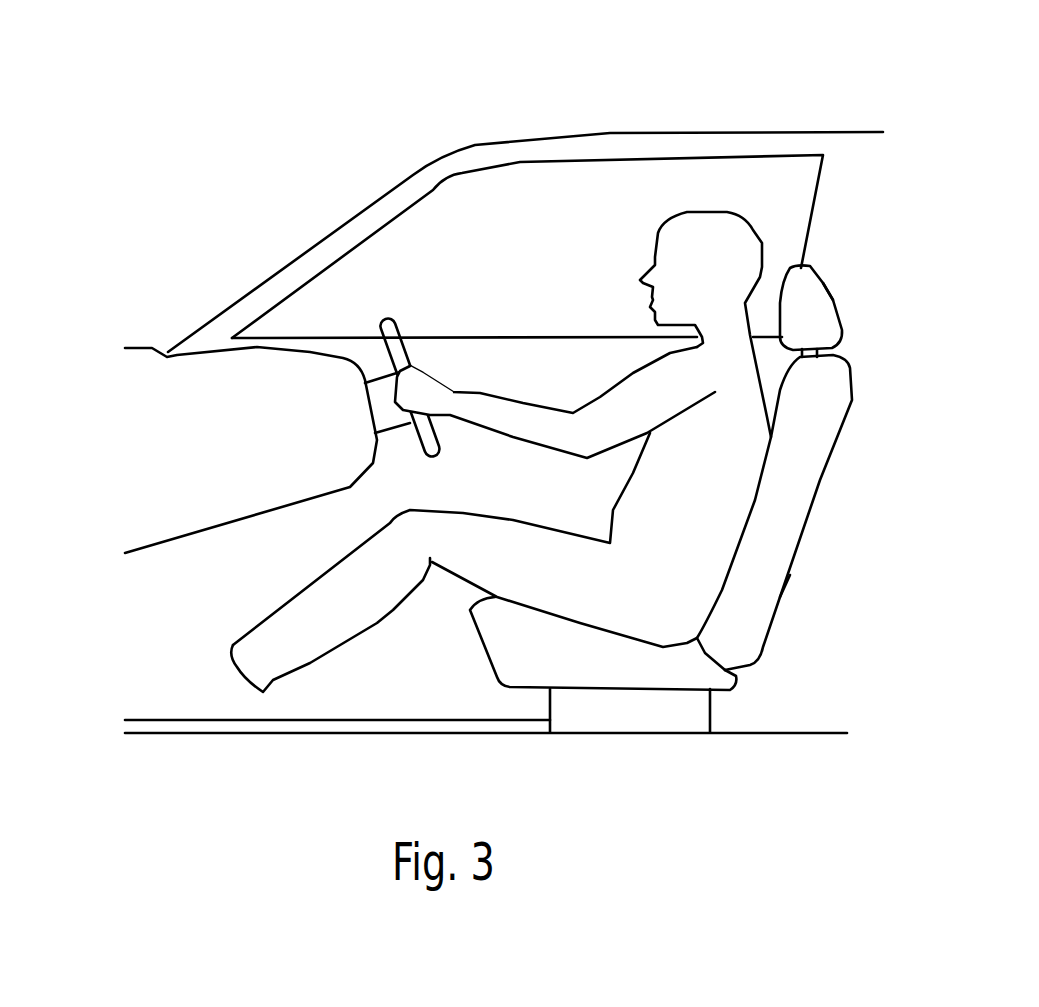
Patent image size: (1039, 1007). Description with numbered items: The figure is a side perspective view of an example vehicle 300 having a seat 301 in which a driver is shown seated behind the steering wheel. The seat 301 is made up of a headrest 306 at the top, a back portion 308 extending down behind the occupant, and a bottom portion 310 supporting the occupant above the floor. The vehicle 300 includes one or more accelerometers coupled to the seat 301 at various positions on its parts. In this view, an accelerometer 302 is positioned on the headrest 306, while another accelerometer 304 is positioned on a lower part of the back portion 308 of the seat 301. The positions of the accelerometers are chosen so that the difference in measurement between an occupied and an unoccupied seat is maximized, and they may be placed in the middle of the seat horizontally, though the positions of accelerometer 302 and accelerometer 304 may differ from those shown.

The vehicle 300 is at (613, 132).
The seat 301 is at (750, 490).
The accelerometer 302 is at (838, 303).
The accelerometer 304 is at (786, 610).
The headrest 306 is at (820, 278).
The back portion 308 is at (802, 540).
The bottom portion 310 is at (610, 667).